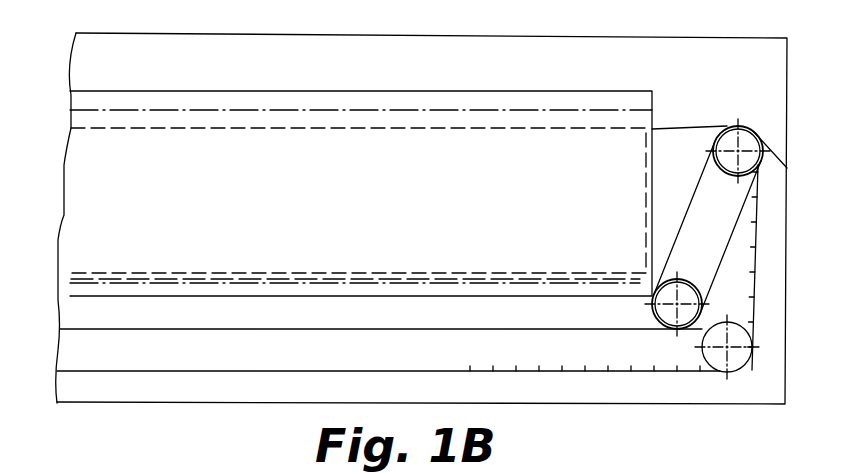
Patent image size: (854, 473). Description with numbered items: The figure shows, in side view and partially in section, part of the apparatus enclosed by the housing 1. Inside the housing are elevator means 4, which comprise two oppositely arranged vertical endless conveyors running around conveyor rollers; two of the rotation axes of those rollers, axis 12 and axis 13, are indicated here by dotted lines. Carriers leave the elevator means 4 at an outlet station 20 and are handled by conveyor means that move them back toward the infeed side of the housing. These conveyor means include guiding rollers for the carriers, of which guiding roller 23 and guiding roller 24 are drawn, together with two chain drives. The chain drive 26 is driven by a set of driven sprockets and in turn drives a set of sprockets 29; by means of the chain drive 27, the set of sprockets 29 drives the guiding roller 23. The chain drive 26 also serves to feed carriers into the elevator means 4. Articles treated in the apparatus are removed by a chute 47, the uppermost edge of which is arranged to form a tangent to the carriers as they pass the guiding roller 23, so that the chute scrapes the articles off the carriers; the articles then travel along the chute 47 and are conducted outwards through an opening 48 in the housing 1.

The housing 1 is at (457, 35).
The elevator means 4 is at (466, 80).
The axis 12 is at (514, 110).
The axis 13 is at (390, 284).
The outlet station 20 is at (690, 110).
The guiding roller 23 is at (752, 134).
The guiding roller 24 is at (742, 366).
The chain drive 26 is at (298, 312).
The chain drive 27 is at (735, 224).
The set of sprockets 29 is at (665, 312).
The chute 47 is at (776, 168).
The opening 48 is at (784, 160).